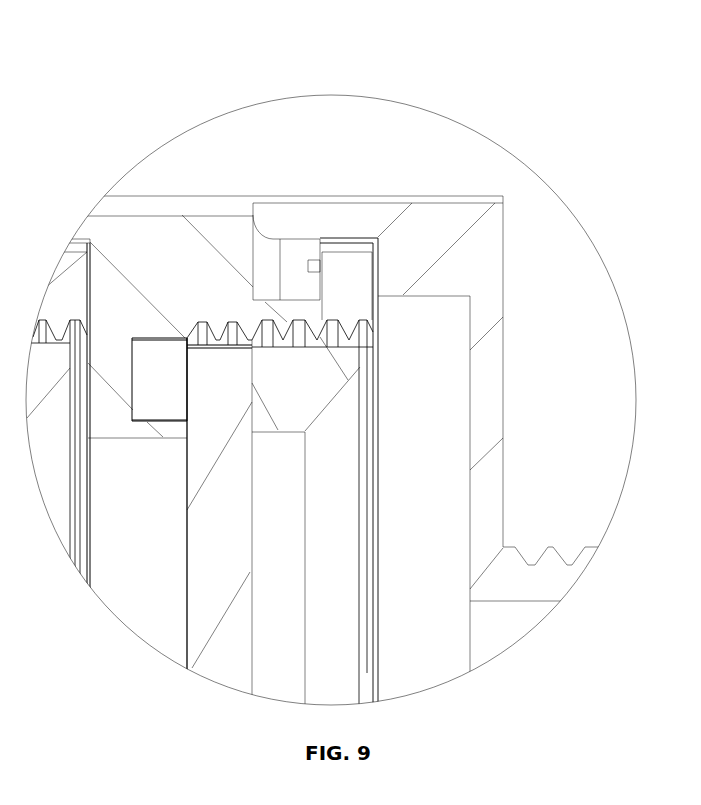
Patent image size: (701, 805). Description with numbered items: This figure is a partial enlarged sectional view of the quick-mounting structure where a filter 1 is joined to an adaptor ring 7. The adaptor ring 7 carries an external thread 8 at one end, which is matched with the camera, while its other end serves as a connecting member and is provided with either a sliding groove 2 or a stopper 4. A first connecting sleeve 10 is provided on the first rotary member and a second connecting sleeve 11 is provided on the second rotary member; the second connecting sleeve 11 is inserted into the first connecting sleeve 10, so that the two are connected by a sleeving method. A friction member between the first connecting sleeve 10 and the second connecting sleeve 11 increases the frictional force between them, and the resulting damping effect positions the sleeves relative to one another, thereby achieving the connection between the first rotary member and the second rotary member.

The filter 1 is at (135, 409).
The sliding groove 2 is at (259, 162).
The stopper 4 is at (426, 169).
The adaptor ring 7 is at (502, 408).
The external thread 8 is at (565, 601).
The first connecting sleeve 10 is at (350, 360).
The second connecting sleeve 11 is at (261, 504).